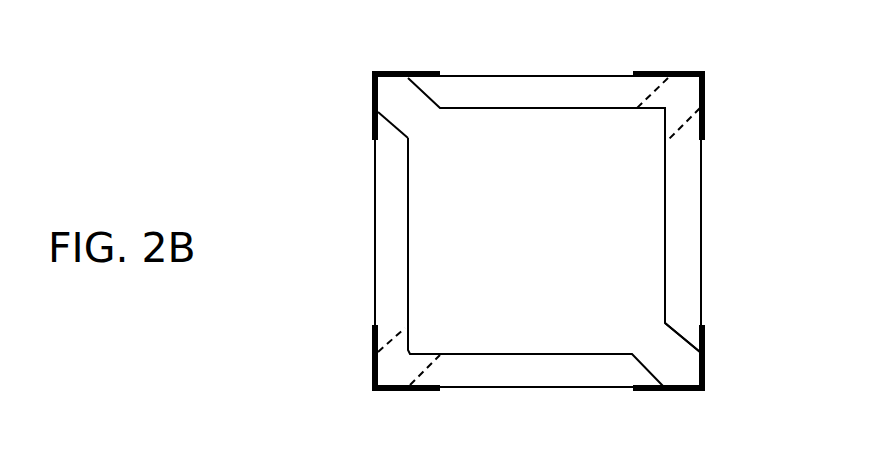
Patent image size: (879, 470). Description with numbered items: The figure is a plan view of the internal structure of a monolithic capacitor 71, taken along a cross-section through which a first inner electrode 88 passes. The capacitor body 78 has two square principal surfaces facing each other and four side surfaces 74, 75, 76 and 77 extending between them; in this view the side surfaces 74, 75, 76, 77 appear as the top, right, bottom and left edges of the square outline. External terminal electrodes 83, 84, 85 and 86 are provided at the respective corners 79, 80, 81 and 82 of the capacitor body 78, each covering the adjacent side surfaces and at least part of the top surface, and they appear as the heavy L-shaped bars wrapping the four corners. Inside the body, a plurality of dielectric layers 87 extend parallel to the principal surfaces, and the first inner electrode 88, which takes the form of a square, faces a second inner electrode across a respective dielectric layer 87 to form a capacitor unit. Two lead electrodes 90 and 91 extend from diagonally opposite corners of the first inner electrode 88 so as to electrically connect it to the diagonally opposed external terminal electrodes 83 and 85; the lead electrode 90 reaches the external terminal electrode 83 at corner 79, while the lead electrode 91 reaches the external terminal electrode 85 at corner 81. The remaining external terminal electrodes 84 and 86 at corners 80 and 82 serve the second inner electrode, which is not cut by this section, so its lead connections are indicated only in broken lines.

The monolithic capacitor 71 is at (305, 46).
The side surface 74 is at (511, 75).
The side surface 75 is at (701, 247).
The side surface 76 is at (522, 388).
The side surface 77 is at (376, 232).
The capacitor body 78 is at (596, 76).
The corner 79 is at (385, 73).
The corner 80 is at (703, 75).
The corner 81 is at (696, 393).
The corner 82 is at (384, 392).
The external terminal electrode 83 is at (419, 73).
The external terminal electrode 84 is at (706, 130).
The external terminal electrode 85 is at (651, 392).
The external terminal electrode 86 is at (372, 352).
The dielectric layer 87 is at (683, 200).
The first inner electrode 88 is at (666, 284).
The lead electrode 90 is at (400, 100).
The lead electrode 91 is at (678, 362).